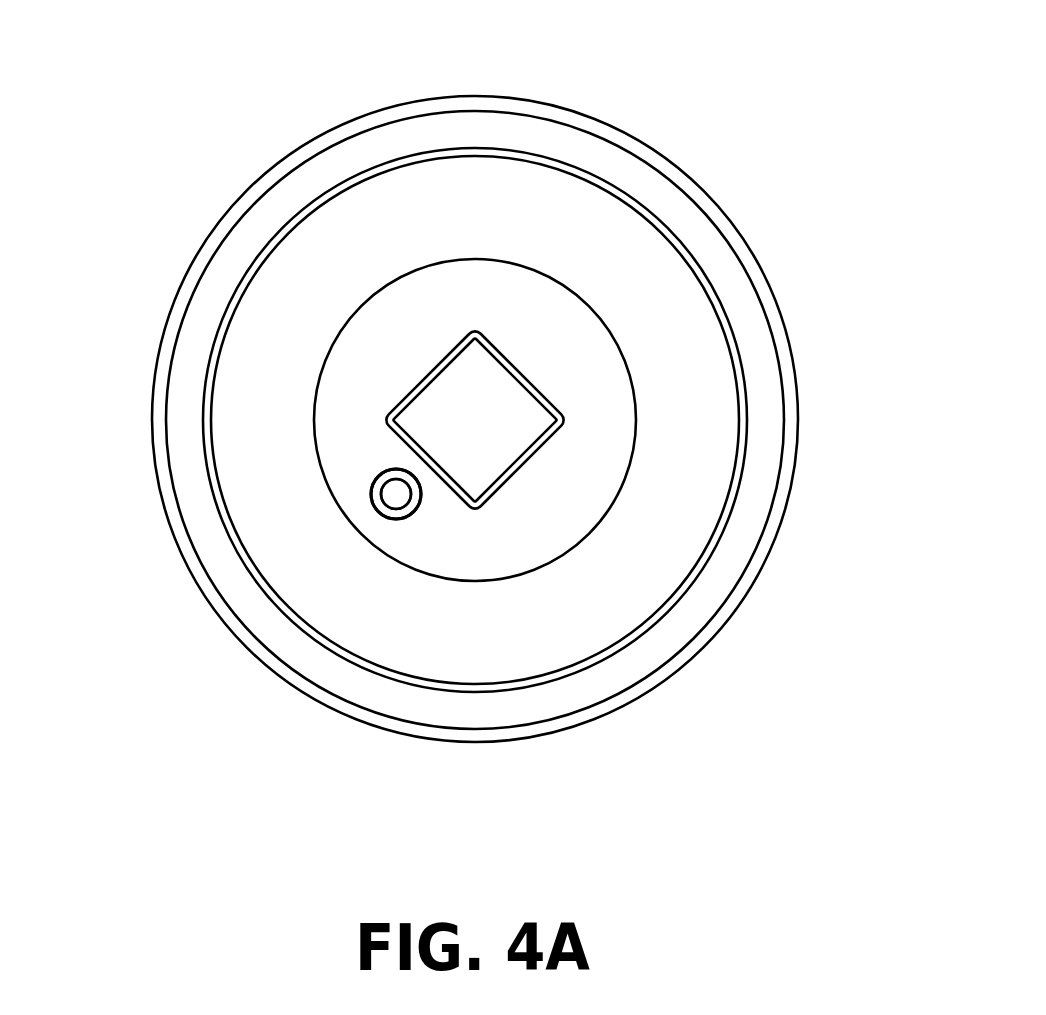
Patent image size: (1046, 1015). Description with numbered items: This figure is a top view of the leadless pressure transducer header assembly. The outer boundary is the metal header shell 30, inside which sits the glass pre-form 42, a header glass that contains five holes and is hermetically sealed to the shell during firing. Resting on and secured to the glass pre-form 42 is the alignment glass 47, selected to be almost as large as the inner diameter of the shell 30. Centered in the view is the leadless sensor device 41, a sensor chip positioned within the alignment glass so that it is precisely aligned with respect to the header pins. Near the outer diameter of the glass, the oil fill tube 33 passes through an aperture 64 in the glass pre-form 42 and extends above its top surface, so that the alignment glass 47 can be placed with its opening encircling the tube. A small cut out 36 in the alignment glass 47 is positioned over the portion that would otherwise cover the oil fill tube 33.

The header shell 30 is at (295, 148).
The alignment glass 47 is at (503, 290).
The glass pre-form 42 is at (527, 367).
The leadless sensor device 41 is at (488, 448).
The oil fill tube 33 is at (370, 490).
The aperture 64 is at (385, 522).
The small cut out 36 is at (402, 523).